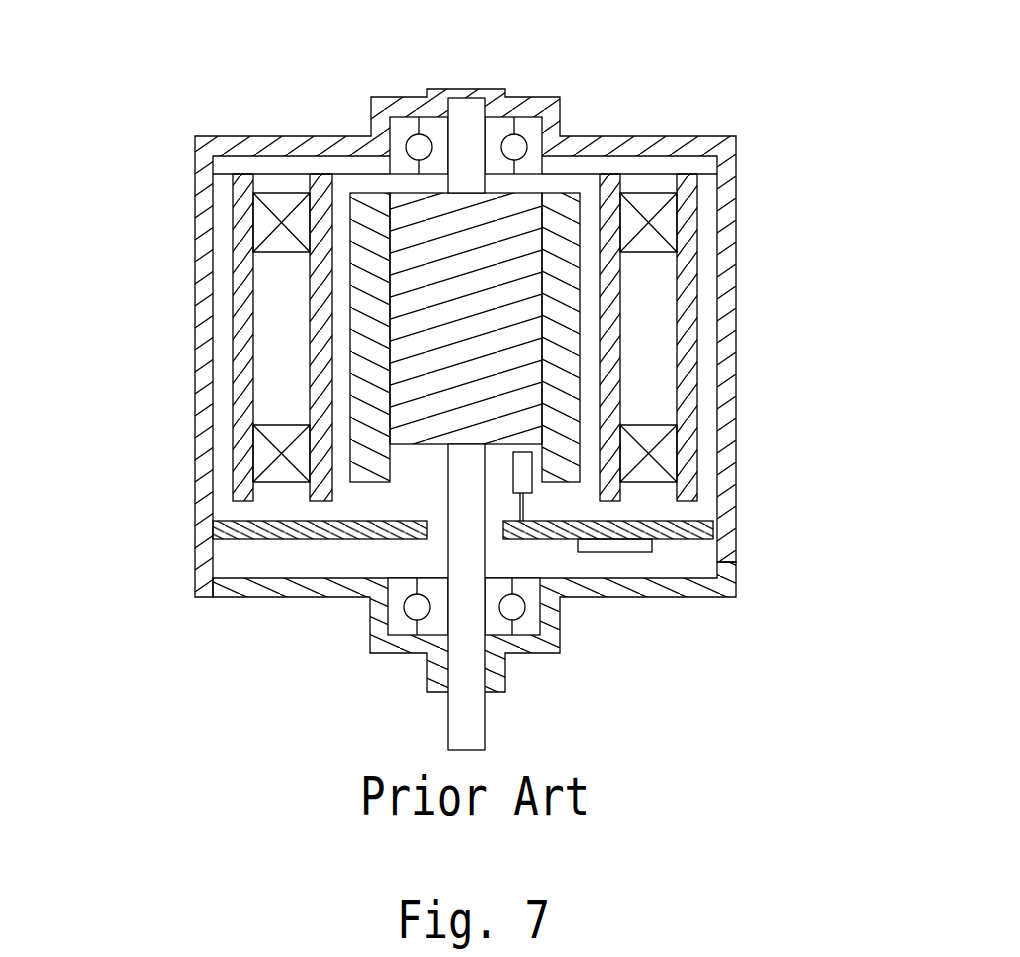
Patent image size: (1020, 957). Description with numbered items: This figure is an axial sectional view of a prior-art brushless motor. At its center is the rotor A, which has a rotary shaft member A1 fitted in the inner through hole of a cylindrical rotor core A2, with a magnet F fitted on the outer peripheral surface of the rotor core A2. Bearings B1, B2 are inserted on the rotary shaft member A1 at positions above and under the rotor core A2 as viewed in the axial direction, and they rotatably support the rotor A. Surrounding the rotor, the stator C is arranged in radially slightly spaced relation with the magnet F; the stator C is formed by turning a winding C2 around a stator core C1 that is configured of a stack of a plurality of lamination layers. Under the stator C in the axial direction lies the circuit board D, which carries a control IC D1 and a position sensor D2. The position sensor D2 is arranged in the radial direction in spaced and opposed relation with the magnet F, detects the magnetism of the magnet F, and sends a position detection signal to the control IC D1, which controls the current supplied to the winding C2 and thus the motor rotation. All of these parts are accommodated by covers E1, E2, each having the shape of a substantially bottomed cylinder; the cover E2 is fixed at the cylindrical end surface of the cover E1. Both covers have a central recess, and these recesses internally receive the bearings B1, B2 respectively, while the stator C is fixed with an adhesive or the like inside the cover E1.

The rotor A is at (358, 380).
The rotary shaft member A1 is at (473, 113).
The rotor core A2 is at (418, 435).
The bearing B1 is at (527, 130).
The bearing B2 is at (493, 627).
The stator C is at (568, 337).
The stator core C1 is at (647, 325).
The winding C2 is at (670, 455).
The circuit board D is at (511, 587).
The control IC D1 is at (603, 557).
The position sensor D2 is at (530, 482).
The cover E1 is at (728, 148).
The cover E2 is at (203, 581).
The magnet F is at (368, 473).